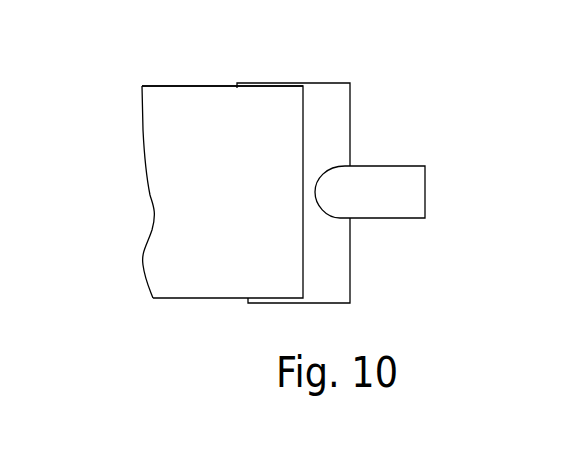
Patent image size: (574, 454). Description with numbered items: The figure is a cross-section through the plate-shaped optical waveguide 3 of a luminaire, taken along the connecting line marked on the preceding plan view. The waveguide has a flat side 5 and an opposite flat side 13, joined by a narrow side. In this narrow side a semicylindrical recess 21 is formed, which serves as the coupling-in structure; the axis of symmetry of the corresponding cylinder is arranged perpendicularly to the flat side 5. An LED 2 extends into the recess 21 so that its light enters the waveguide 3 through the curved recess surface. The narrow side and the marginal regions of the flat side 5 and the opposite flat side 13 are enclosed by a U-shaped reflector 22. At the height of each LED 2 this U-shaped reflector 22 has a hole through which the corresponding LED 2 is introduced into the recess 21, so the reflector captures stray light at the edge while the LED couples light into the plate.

The LED 2 is at (427, 189).
The plate-shaped optical waveguide 3 is at (148, 209).
The flat side 5 is at (184, 300).
The opposite flat side 13 is at (184, 86).
The semicylindrical recess 21 is at (338, 127).
The U-shaped reflector 22 is at (352, 249).